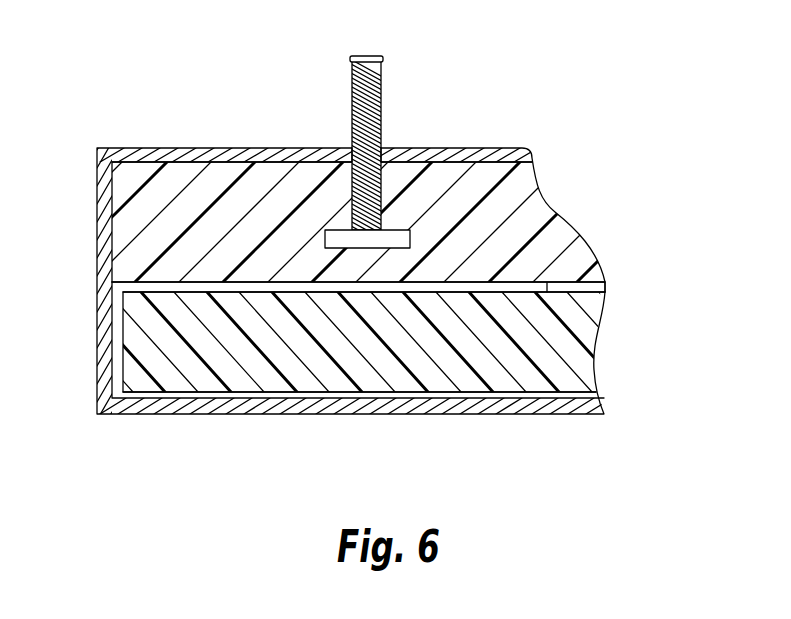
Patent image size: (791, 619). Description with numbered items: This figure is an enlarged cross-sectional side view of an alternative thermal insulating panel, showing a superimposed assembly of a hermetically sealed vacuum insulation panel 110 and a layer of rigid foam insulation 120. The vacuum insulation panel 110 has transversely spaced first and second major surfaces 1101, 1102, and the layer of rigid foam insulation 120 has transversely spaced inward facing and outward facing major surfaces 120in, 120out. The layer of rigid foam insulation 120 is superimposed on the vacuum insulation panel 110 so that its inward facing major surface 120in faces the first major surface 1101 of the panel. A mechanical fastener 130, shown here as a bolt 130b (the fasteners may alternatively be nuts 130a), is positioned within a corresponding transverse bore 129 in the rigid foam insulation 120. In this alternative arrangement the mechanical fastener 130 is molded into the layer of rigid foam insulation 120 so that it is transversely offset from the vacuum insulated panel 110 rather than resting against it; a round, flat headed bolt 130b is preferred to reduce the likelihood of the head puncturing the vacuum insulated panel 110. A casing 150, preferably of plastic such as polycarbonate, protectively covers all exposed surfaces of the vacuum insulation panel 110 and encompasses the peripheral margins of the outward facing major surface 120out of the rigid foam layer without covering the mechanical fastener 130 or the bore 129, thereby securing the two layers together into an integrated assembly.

The vacuum insulation panel 110 is at (128, 332).
The first major surface 1101 is at (560, 279).
The second major surface 1102 is at (497, 399).
The layer of rigid foam insulation 120 is at (125, 207).
The outward facing major surface 120out is at (492, 160).
The inward facing major surface 120in is at (543, 293).
The transverse bore 129 is at (365, 168).
The mechanical fastener 130 is at (374, 124).
The nut 130a is at (343, 229).
The bolt 130b is at (382, 62).
The casing 150 is at (180, 152).